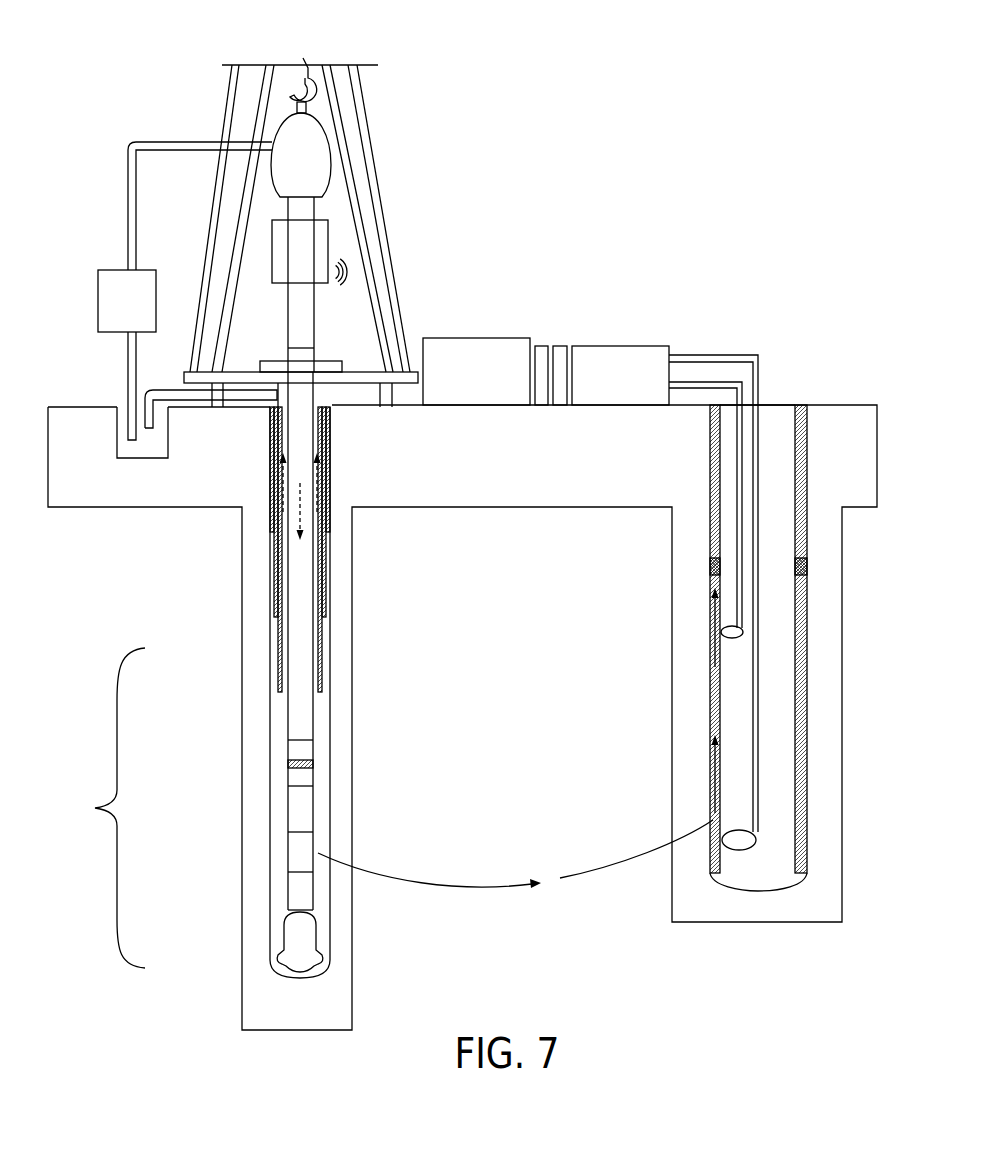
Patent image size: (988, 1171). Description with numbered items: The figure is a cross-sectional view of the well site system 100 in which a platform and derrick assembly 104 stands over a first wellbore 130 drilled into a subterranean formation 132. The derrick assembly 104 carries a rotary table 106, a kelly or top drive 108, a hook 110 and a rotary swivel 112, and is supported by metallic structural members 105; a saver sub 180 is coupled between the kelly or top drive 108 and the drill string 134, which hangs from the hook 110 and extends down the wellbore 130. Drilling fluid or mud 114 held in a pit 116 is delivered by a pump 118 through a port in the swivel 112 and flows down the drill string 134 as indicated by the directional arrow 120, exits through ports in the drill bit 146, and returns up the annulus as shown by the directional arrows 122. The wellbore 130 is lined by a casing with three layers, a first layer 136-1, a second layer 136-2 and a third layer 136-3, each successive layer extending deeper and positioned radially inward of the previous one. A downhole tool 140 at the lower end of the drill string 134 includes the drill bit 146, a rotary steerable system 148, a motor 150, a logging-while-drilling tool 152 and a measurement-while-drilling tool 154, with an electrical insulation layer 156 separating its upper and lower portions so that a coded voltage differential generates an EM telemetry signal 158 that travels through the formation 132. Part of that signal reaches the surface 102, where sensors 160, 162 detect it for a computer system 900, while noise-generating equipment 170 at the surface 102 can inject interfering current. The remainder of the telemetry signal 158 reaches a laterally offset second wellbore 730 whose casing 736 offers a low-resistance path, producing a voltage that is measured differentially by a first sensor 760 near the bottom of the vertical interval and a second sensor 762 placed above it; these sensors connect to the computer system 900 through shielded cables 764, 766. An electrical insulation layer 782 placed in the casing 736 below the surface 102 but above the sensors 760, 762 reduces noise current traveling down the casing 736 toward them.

The well site system 100 is at (88, 99).
The platform and derrick assembly 104 is at (394, 144).
The hook 110 is at (317, 88).
The rotary swivel 112 is at (287, 140).
The kelly or top drive 108 is at (272, 240).
The saver sub 180 is at (315, 295).
The pump 118 is at (98, 297).
The pit 116 is at (117, 398).
The drilling fluid or mud 114 is at (138, 460).
The rotary table 106 is at (262, 368).
The metallic structural members 105 is at (402, 318).
The wellbore 130 is at (317, 398).
The subterranean formation 132 is at (168, 492).
The drill string 134 is at (315, 730).
The first casing layer 136-1 is at (333, 525).
The second casing layer 136-2 is at (330, 570).
The third casing layer 136-3 is at (327, 647).
The directional arrow 120 is at (290, 523).
The directional arrows 122 is at (283, 472).
The electrical insulation layer 156 is at (300, 762).
The measurement-while-drilling tool 154 is at (288, 772).
The logging-while-drilling tool 152 is at (288, 792).
The motor 150 is at (288, 853).
The rotary steerable system 148 is at (288, 892).
The drill bit 146 is at (283, 942).
The downhole tool 140 is at (95, 808).
The EM telemetry signal 158 is at (563, 878).
The noise-generating equipment 170 is at (510, 338).
The sensor 162 is at (545, 346).
The sensor 160 is at (560, 346).
The computer system 900 is at (610, 346).
The surface 102 is at (685, 403).
The shielded cable 764 is at (758, 785).
The shielded cable 766 is at (737, 456).
The second wellbore 730 is at (792, 386).
The casing 736 is at (808, 680).
The electrical insulation layer 782 is at (808, 568).
The second sensor 762 is at (702, 514).
The first sensor 760 is at (768, 855).